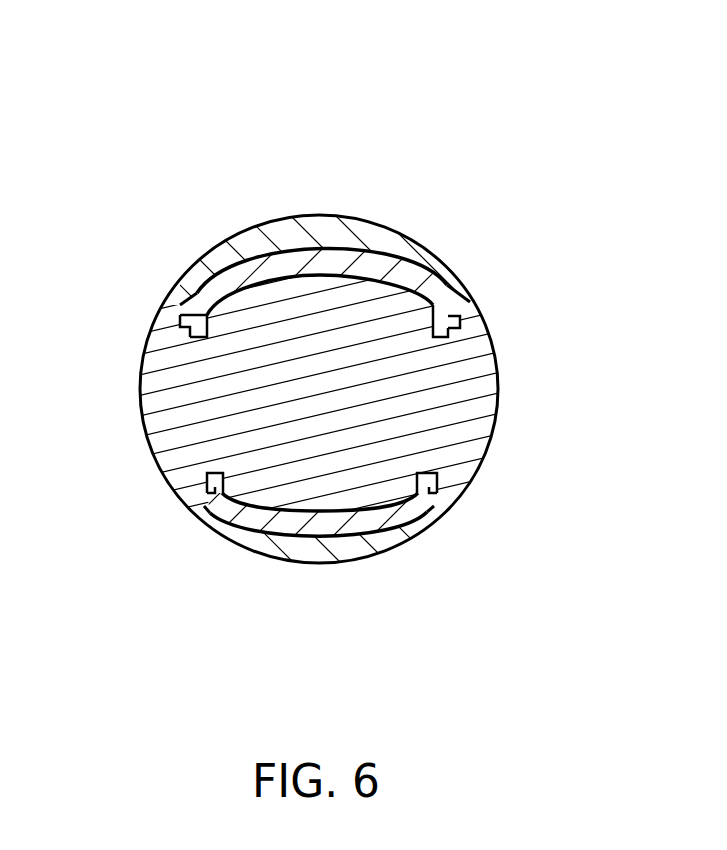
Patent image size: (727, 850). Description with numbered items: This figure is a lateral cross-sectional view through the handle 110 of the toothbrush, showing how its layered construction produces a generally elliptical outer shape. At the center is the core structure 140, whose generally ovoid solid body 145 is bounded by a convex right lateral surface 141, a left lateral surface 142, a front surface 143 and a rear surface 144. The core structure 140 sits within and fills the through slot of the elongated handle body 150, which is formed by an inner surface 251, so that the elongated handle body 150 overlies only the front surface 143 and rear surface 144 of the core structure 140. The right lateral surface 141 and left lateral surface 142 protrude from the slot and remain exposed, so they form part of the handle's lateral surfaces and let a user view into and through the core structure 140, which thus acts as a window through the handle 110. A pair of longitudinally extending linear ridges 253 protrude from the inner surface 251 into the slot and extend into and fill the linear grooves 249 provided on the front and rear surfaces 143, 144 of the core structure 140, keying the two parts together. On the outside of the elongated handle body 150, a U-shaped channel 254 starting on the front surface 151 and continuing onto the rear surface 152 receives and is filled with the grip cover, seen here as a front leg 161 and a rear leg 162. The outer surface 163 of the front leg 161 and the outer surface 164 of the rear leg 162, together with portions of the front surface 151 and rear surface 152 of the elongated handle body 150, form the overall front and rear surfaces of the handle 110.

The handle 110 is at (565, 99).
The core structure 140 is at (339, 389).
The right lateral surface 141 is at (498, 396).
The left lateral surface 142 is at (143, 430).
The front surface 143 is at (266, 242).
The rear surface 144 is at (245, 545).
The solid body 145 is at (272, 399).
The elongated handle body 150 is at (233, 282).
The front surface 151 is at (396, 255).
The rear surface 152 is at (323, 545).
The front leg 161 is at (376, 232).
The rear leg 162 is at (364, 548).
The outer surface 163 is at (338, 218).
The outer surface 164 is at (323, 540).
The linear grooves 249 is at (195, 340).
The inner surface 251 is at (253, 298).
The linear ridges 253 is at (180, 320).
The channel 254 is at (436, 268).